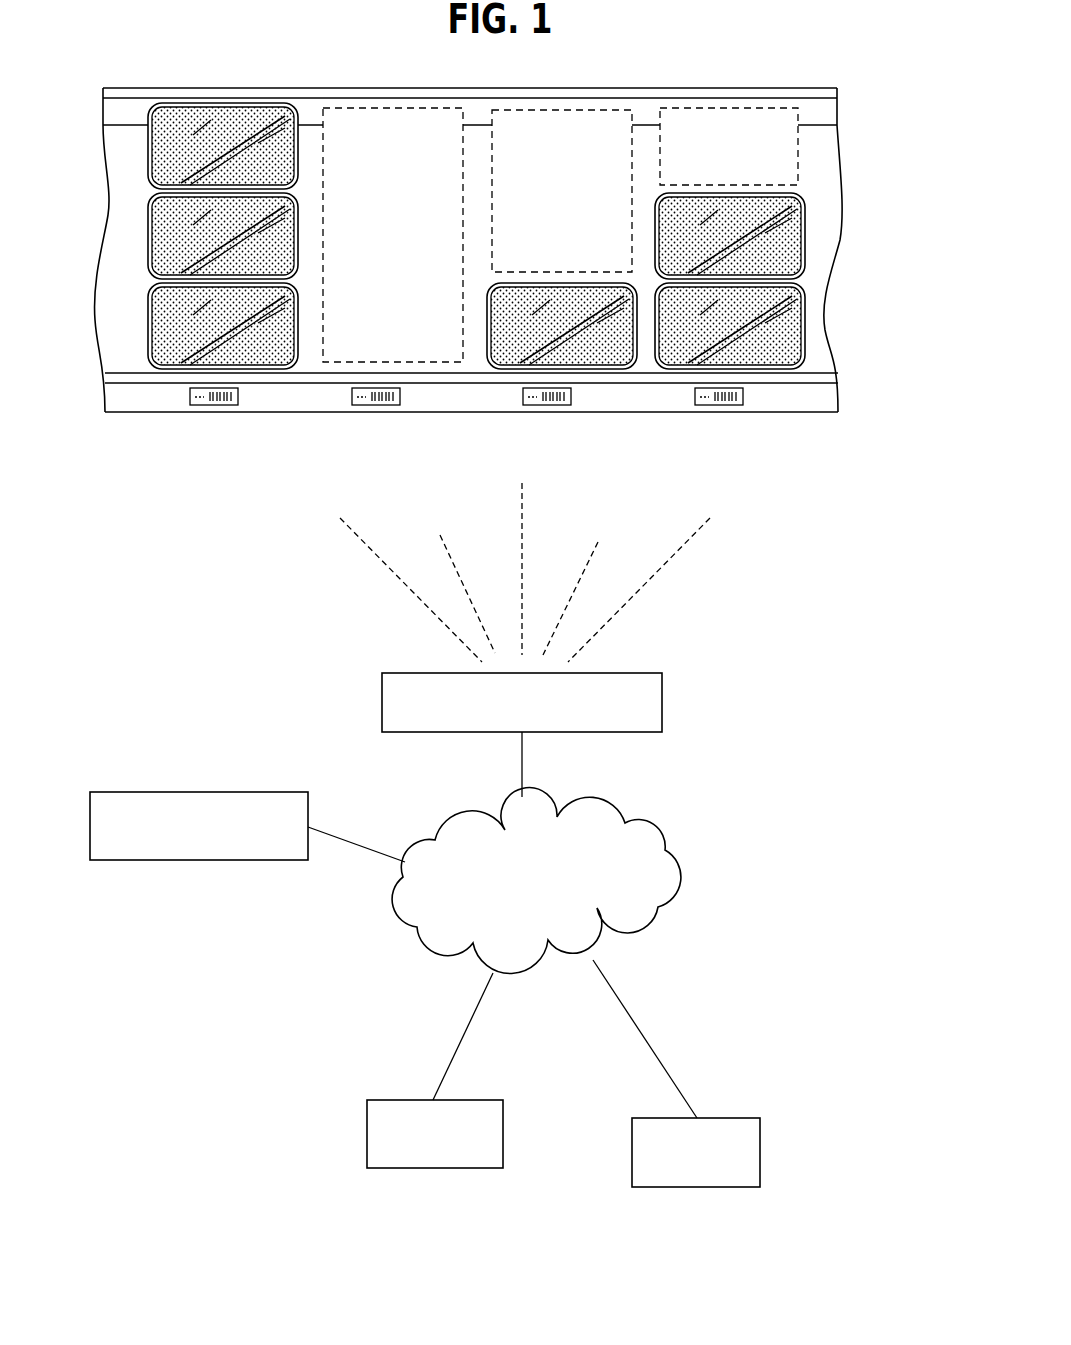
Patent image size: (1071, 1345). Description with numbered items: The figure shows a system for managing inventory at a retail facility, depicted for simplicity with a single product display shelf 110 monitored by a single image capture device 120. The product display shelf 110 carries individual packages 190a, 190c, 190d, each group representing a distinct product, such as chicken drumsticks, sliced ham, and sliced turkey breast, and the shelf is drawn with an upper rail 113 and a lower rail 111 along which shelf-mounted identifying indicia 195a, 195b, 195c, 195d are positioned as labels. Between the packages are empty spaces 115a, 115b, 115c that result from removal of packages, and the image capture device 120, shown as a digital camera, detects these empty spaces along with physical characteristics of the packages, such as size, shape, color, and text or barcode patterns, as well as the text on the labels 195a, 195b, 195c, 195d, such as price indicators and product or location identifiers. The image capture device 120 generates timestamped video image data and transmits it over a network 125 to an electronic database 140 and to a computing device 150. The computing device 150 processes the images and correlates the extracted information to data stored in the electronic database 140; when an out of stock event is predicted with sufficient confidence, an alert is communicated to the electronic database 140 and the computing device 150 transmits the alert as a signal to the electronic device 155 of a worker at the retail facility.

The product display shelf 110 is at (490, 249).
The lower shelf rail 111 is at (312, 380).
The upper shelf rail 113 is at (347, 96).
The empty space 115a is at (390, 108).
The empty space 115b is at (593, 110).
The empty space 115c is at (710, 108).
The individual package 190a is at (187, 127).
The individual package 190c is at (495, 372).
The individual package 190d is at (770, 350).
The shelf-mounted identifying indicia 195a is at (228, 407).
The shelf-mounted identifying indicia 195b is at (395, 407).
The shelf-mounted identifying indicia 195c is at (532, 405).
The shelf-mounted identifying indicia 195d is at (737, 405).
The image capture device 120 is at (663, 708).
The network 125 is at (658, 823).
The electronic database 140 is at (435, 1168).
The computing device 150 is at (713, 1187).
The electronic device 155 is at (218, 860).